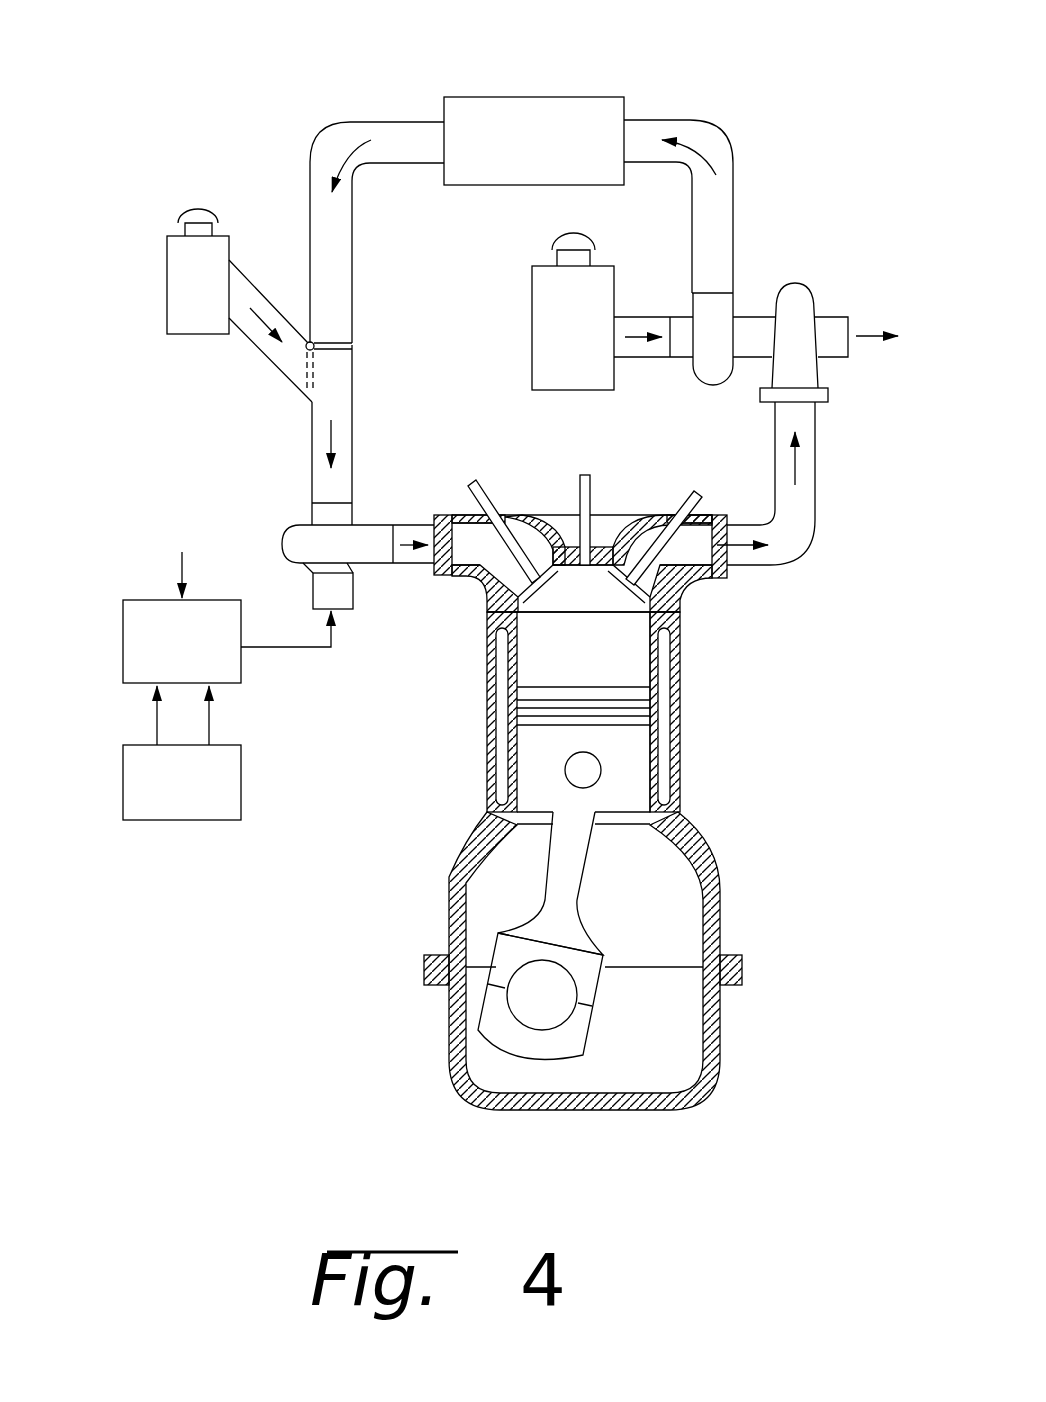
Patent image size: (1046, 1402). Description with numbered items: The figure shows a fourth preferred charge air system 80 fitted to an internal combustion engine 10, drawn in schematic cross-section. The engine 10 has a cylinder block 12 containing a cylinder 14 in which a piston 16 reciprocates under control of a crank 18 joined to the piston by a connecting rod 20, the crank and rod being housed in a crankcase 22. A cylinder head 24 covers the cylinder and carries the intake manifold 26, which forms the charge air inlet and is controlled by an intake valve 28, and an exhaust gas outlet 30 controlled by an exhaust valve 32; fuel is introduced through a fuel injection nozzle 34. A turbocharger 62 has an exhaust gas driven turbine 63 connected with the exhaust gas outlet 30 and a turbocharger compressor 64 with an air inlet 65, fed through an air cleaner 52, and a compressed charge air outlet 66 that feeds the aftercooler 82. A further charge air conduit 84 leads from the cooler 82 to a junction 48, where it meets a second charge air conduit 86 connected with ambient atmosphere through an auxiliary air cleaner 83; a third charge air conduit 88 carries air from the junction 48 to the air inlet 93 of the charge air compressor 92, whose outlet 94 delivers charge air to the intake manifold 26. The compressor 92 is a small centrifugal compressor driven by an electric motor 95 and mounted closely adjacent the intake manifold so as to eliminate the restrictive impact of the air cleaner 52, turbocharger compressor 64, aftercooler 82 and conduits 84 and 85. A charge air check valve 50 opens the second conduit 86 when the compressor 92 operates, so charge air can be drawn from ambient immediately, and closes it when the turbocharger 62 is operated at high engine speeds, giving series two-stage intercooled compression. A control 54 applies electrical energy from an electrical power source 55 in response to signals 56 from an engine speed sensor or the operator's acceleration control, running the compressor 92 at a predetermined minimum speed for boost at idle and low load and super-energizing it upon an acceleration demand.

The internal combustion engine 10 is at (387, 1021).
The cylinder block 12 is at (678, 716).
The cylinder 14 is at (665, 662).
The piston 16 is at (622, 778).
The crank 18 is at (552, 1013).
The connecting rod 20 is at (565, 902).
The crankcase 22 is at (720, 897).
The cylinder head 24 is at (484, 594).
The intake manifold 26 is at (470, 527).
The intake valve 28 is at (482, 492).
The exhaust gas outlet 30 is at (727, 558).
The exhaust valve 32 is at (672, 500).
The fuel injection nozzle 34 is at (582, 477).
The junction 48 is at (337, 375).
The charge air check valve 50 is at (353, 347).
The air cleaner 52 is at (532, 348).
The control 54 is at (123, 625).
The electrical power source 55 is at (241, 793).
The signals 56 is at (178, 572).
The turbocharger 62 is at (806, 272).
The exhaust gas driven turbine 63 is at (832, 375).
The turbocharger compressor 64 is at (713, 387).
The air inlet 65 is at (672, 316).
The compressed charge air outlet 66 is at (738, 302).
The charge air system 80 is at (280, 157).
The aftercooler 82 is at (566, 97).
The auxiliary air cleaner 83 is at (167, 270).
The further charge air conduit 84 is at (353, 232).
The conduit 85 is at (745, 168).
The second charge air conduit 86 is at (258, 350).
The third charge air conduit 88 is at (353, 430).
The charge air compressor 92 is at (282, 540).
The air inlet 93 is at (312, 515).
The outlet 94 is at (380, 525).
The electric motor 95 is at (353, 592).